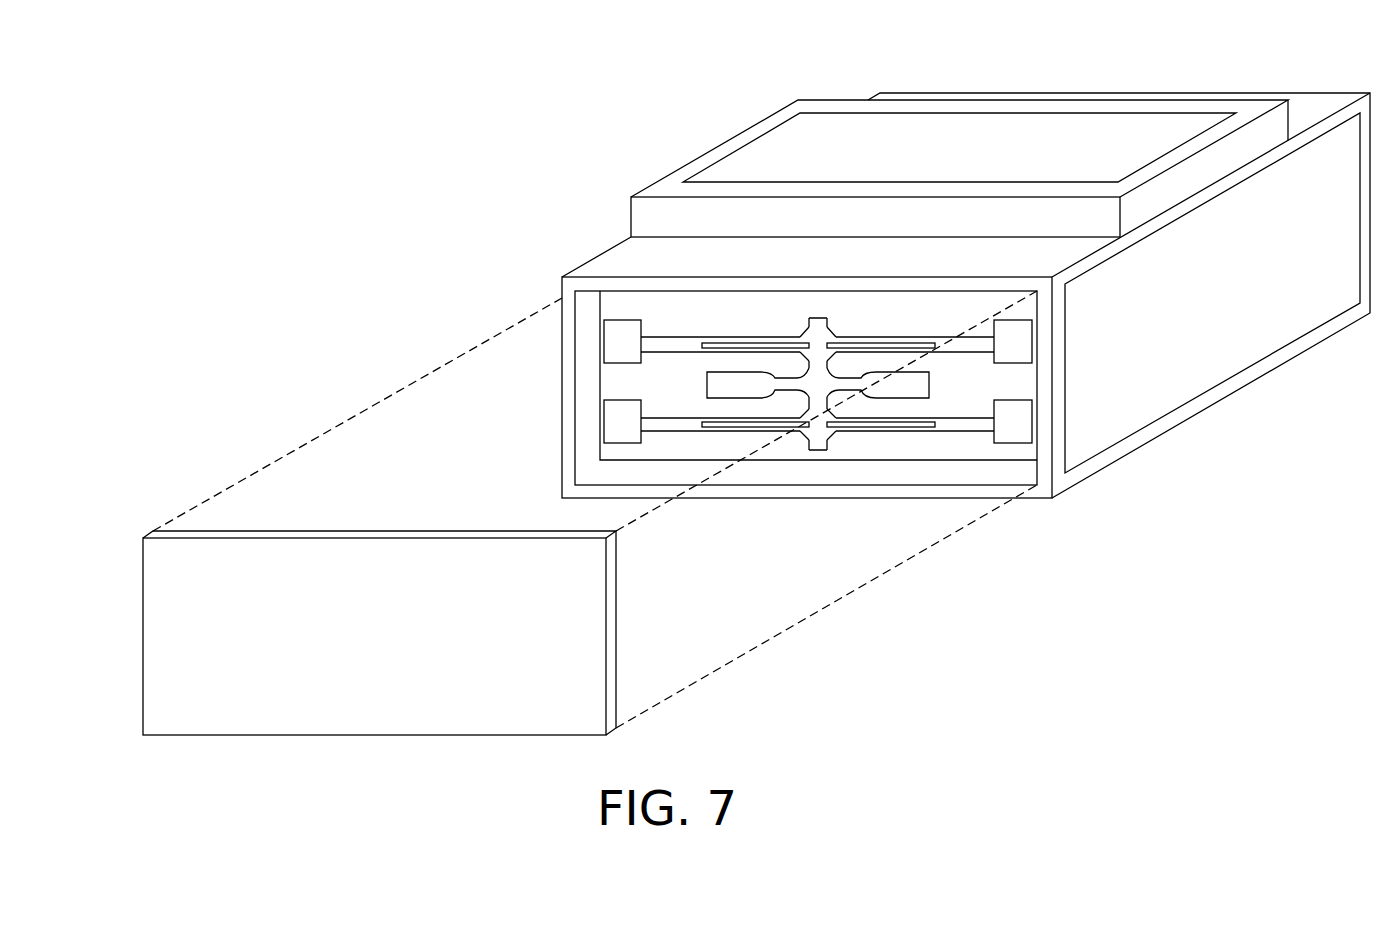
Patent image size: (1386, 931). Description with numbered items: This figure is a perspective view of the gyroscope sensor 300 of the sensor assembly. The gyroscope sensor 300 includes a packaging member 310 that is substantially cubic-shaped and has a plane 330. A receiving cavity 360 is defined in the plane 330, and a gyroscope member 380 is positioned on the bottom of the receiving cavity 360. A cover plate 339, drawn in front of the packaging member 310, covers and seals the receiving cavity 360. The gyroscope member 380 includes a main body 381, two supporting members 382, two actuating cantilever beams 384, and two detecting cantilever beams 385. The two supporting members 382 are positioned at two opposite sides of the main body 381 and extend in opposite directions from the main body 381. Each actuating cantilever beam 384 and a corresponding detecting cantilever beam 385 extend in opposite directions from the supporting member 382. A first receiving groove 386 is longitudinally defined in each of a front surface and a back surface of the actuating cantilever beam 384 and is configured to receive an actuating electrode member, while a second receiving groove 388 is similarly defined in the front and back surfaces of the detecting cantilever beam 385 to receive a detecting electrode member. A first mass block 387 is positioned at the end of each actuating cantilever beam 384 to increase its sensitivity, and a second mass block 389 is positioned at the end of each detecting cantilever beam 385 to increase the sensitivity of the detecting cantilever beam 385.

The gyroscope sensor 300 is at (385, 145).
The packaging member 310 is at (1165, 423).
The plane 330 is at (1042, 492).
The cover plate 339 is at (303, 572).
The receiving cavity 360 is at (883, 435).
The gyroscope member 380 is at (630, 308).
The main body 381 is at (783, 382).
The supporting member 382 is at (820, 443).
The actuating cantilever beam 384 is at (658, 425).
The detecting cantilever beam 385 is at (958, 421).
The first receiving groove 386 is at (795, 400).
The first mass block 387 is at (613, 427).
The second receiving groove 388 is at (858, 424).
The second mass block 389 is at (1012, 431).